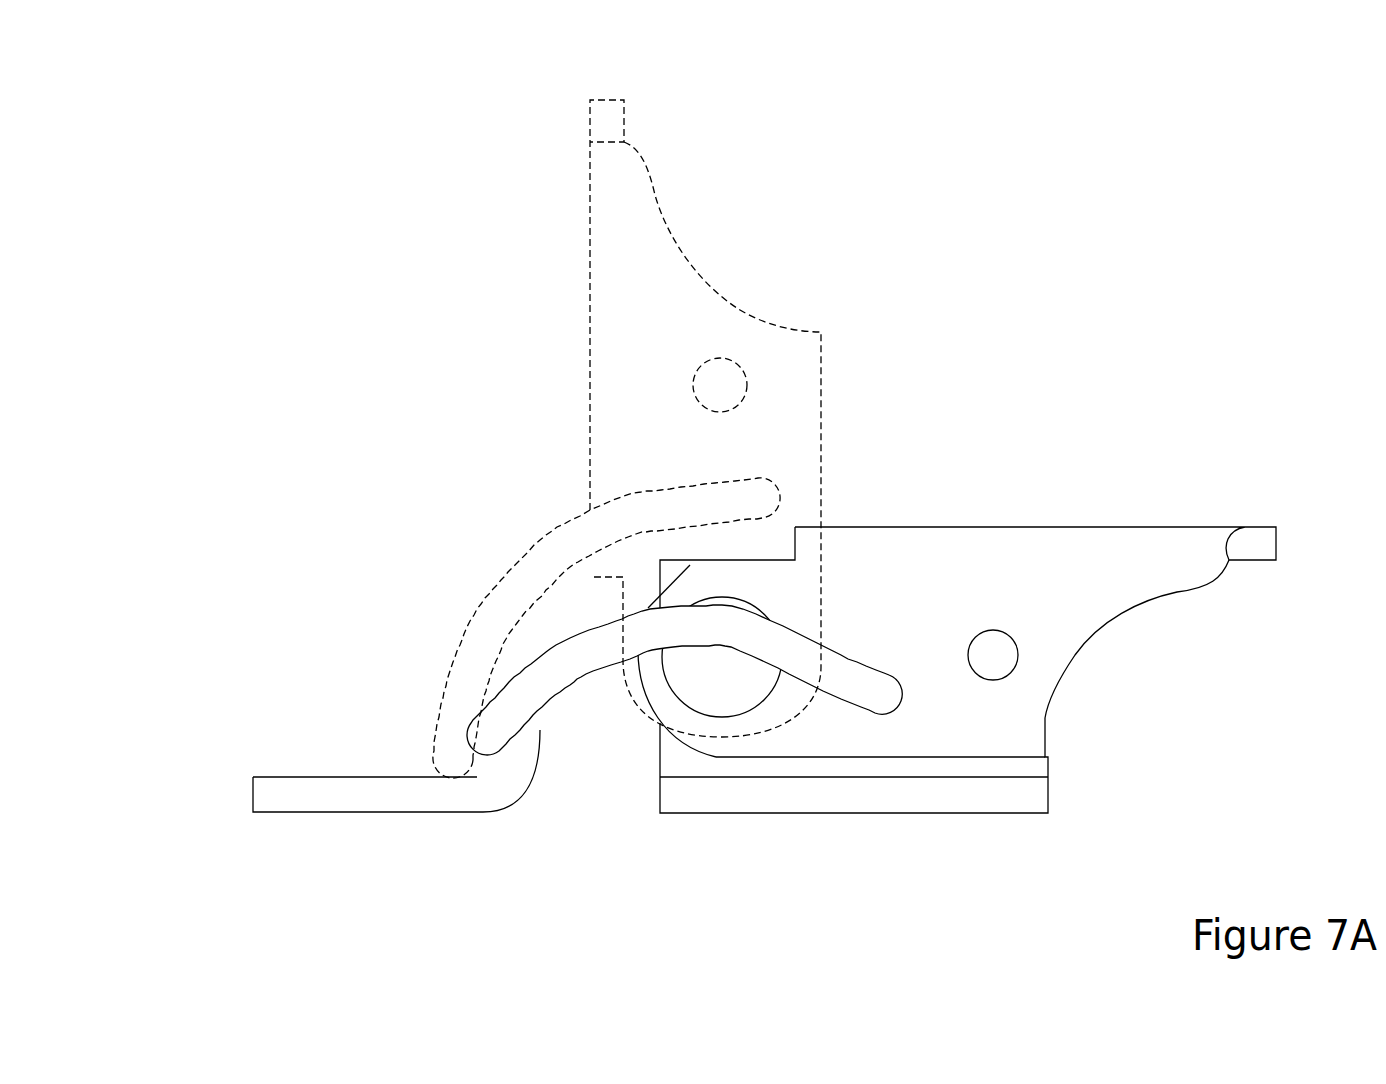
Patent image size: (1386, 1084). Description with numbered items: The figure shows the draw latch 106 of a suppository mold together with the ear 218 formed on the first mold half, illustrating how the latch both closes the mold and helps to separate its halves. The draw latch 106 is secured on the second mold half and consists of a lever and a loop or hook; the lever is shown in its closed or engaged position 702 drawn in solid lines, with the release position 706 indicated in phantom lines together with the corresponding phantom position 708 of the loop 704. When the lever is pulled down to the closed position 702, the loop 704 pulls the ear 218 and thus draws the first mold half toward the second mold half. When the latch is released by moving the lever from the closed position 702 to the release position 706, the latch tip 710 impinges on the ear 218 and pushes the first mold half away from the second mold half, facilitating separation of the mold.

The draw latch 106 is at (1152, 228).
The ear 218 is at (360, 716).
The closed position 702 is at (1184, 516).
The leaf spring 704 is at (553, 637).
The release position 706 is at (722, 176).
The spring in lifted position (phantom) 708 is at (468, 563).
The latch tip 710 is at (640, 734).